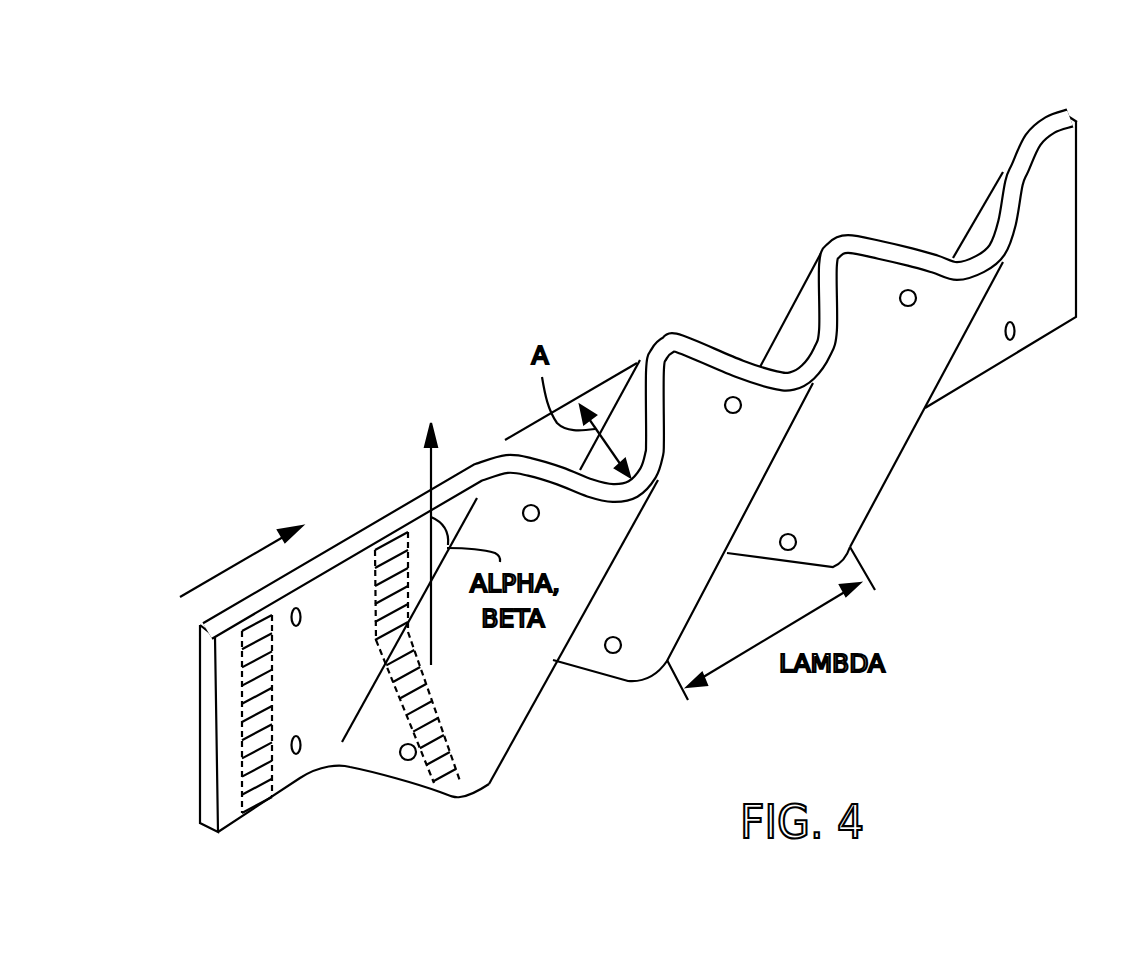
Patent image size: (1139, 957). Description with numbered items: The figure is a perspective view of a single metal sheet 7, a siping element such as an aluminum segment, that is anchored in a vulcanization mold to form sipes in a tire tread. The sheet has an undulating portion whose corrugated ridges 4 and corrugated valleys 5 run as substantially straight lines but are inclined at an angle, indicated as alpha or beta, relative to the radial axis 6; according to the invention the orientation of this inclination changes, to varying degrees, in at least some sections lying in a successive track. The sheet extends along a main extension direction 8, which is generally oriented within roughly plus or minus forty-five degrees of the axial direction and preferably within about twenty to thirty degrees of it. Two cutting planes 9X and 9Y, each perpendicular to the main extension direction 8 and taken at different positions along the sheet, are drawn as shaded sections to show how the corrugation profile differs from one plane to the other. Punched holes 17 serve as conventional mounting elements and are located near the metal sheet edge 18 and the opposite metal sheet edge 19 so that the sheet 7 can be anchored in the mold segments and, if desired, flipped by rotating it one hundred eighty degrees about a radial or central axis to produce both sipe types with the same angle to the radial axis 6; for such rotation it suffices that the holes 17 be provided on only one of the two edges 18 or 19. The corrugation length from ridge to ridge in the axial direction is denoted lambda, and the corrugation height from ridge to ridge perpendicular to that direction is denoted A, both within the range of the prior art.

The corrugated ridge 4 is at (489, 786).
The corrugated valley 5 is at (673, 333).
The radial axis 6 is at (428, 460).
The metal sheet 7 is at (866, 459).
The main extension direction 8 is at (242, 558).
The cutting plane 9X is at (272, 742).
The cutting plane 9Y is at (460, 797).
The punched holes 17 is at (300, 616).
The metal sheet edge 18 is at (230, 833).
The metal sheet edge 19 is at (1060, 118).